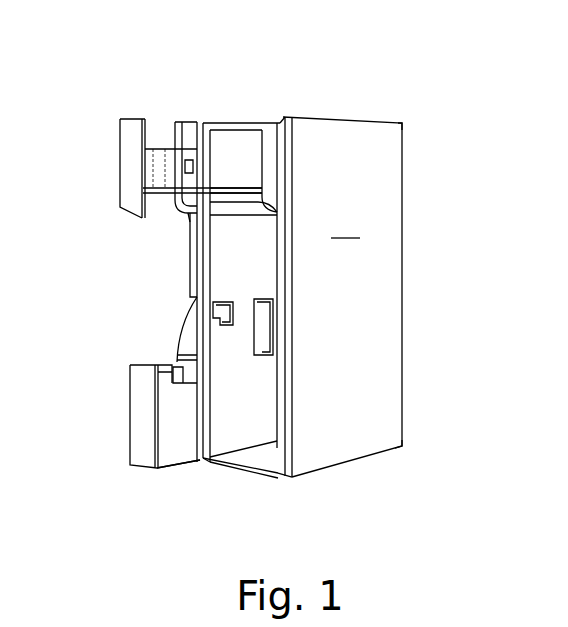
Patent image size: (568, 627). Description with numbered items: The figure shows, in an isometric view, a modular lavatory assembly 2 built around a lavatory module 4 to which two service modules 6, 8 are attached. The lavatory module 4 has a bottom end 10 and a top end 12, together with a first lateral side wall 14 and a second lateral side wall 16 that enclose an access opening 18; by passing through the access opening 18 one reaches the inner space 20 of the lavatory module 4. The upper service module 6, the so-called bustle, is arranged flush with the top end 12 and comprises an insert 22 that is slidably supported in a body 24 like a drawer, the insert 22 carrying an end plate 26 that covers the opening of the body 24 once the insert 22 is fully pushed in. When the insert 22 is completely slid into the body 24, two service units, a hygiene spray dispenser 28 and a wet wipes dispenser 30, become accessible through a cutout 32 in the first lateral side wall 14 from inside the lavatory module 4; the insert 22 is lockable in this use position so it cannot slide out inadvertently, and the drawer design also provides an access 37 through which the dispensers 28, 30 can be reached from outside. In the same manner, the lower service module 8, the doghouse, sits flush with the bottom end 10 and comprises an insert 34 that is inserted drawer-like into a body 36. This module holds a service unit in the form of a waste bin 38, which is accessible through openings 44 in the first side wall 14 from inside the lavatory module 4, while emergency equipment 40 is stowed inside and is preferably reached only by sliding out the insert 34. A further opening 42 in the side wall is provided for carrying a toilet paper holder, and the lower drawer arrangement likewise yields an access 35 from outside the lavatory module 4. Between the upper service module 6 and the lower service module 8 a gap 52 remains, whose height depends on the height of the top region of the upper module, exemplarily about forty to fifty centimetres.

The lavatory assembly 2 is at (352, 292).
The lavatory module 4 is at (378, 279).
The service module 6 is at (156, 244).
The service module 8 is at (112, 444).
The bottom end 10 is at (405, 445).
The top end 12 is at (404, 121).
The first lateral side wall 14 is at (186, 290).
The second lateral side wall 16 is at (323, 297).
The access opening 18 is at (282, 115).
The inner space 20 is at (232, 342).
The insert 22 is at (162, 195).
The body 24 is at (188, 130).
The end plate 26 is at (133, 193).
The hygiene spray dispenser 28 is at (172, 148).
The wet wipes dispenser 30 is at (188, 162).
The cutout 32 is at (243, 225).
The insert 34 is at (177, 450).
The access 35 is at (203, 480).
The body 36 is at (182, 342).
The access 37 is at (176, 222).
The waste bin 38 is at (178, 418).
The emergency equipment 40 is at (162, 373).
The further opening 42 is at (262, 352).
The openings 44 is at (222, 322).
The gap 52 is at (192, 268).